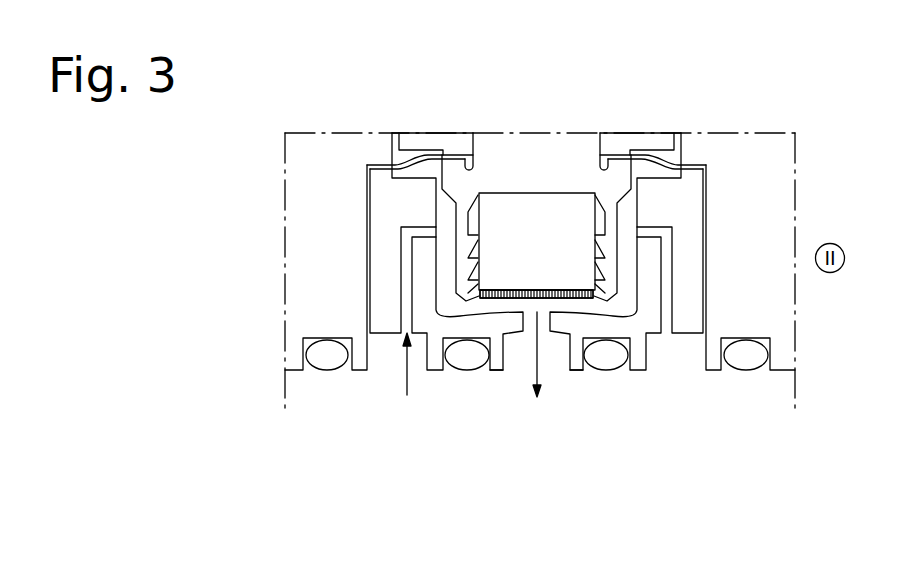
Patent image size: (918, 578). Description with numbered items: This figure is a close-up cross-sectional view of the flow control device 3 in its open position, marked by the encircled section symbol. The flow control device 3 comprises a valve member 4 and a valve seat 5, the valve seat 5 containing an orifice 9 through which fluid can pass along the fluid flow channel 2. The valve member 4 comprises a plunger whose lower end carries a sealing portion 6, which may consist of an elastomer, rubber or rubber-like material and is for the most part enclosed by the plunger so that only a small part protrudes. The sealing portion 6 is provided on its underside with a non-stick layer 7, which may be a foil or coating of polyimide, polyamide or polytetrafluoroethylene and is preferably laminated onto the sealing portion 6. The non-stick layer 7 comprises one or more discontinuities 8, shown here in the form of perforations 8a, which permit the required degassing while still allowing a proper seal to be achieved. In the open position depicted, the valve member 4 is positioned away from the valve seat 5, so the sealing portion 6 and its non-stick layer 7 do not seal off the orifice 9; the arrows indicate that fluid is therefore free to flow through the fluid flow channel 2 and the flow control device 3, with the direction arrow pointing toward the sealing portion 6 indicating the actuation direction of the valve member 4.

The fluid flow channel 2 is at (406, 266).
The flow control device 3 is at (556, 172).
The valve member 4 is at (506, 170).
The valve seat 5 is at (462, 327).
The sealing portion 6 is at (530, 236).
The non-stick layer 7 is at (558, 297).
The discontinuities 8 is at (515, 297).
The perforations 8a is at (536, 294).
The orifice 9 is at (543, 328).